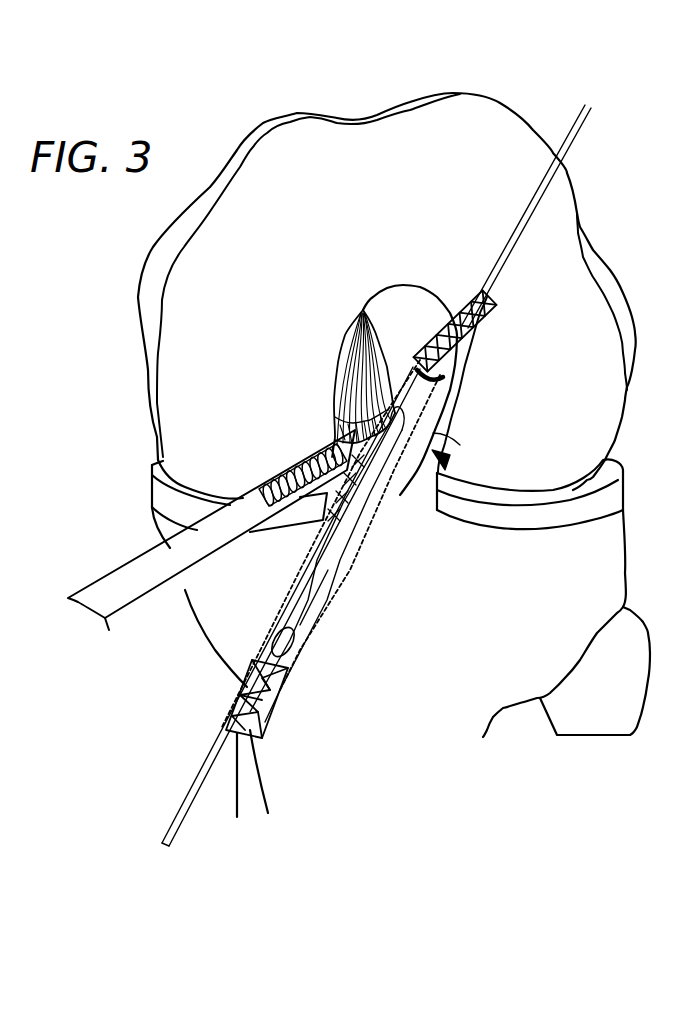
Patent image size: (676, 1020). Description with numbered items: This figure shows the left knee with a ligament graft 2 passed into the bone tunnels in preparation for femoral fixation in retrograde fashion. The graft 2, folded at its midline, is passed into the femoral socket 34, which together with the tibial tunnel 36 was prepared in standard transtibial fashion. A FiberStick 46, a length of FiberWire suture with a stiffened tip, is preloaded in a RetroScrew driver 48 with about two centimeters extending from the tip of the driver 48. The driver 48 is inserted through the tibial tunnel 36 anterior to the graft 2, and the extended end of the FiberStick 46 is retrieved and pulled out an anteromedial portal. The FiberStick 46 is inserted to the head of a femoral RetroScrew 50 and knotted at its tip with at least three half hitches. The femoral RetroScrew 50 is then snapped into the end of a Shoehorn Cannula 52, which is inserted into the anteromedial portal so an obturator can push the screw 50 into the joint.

The graft 2 is at (433, 433).
The femoral socket 34 is at (470, 342).
The tibial tunnel 36 is at (323, 530).
The FiberStick 46 is at (388, 478).
The RetroScrew driver 48 is at (332, 570).
The femoral RetroScrew 50 is at (312, 452).
The Shoehorn Cannula 52 is at (223, 535).